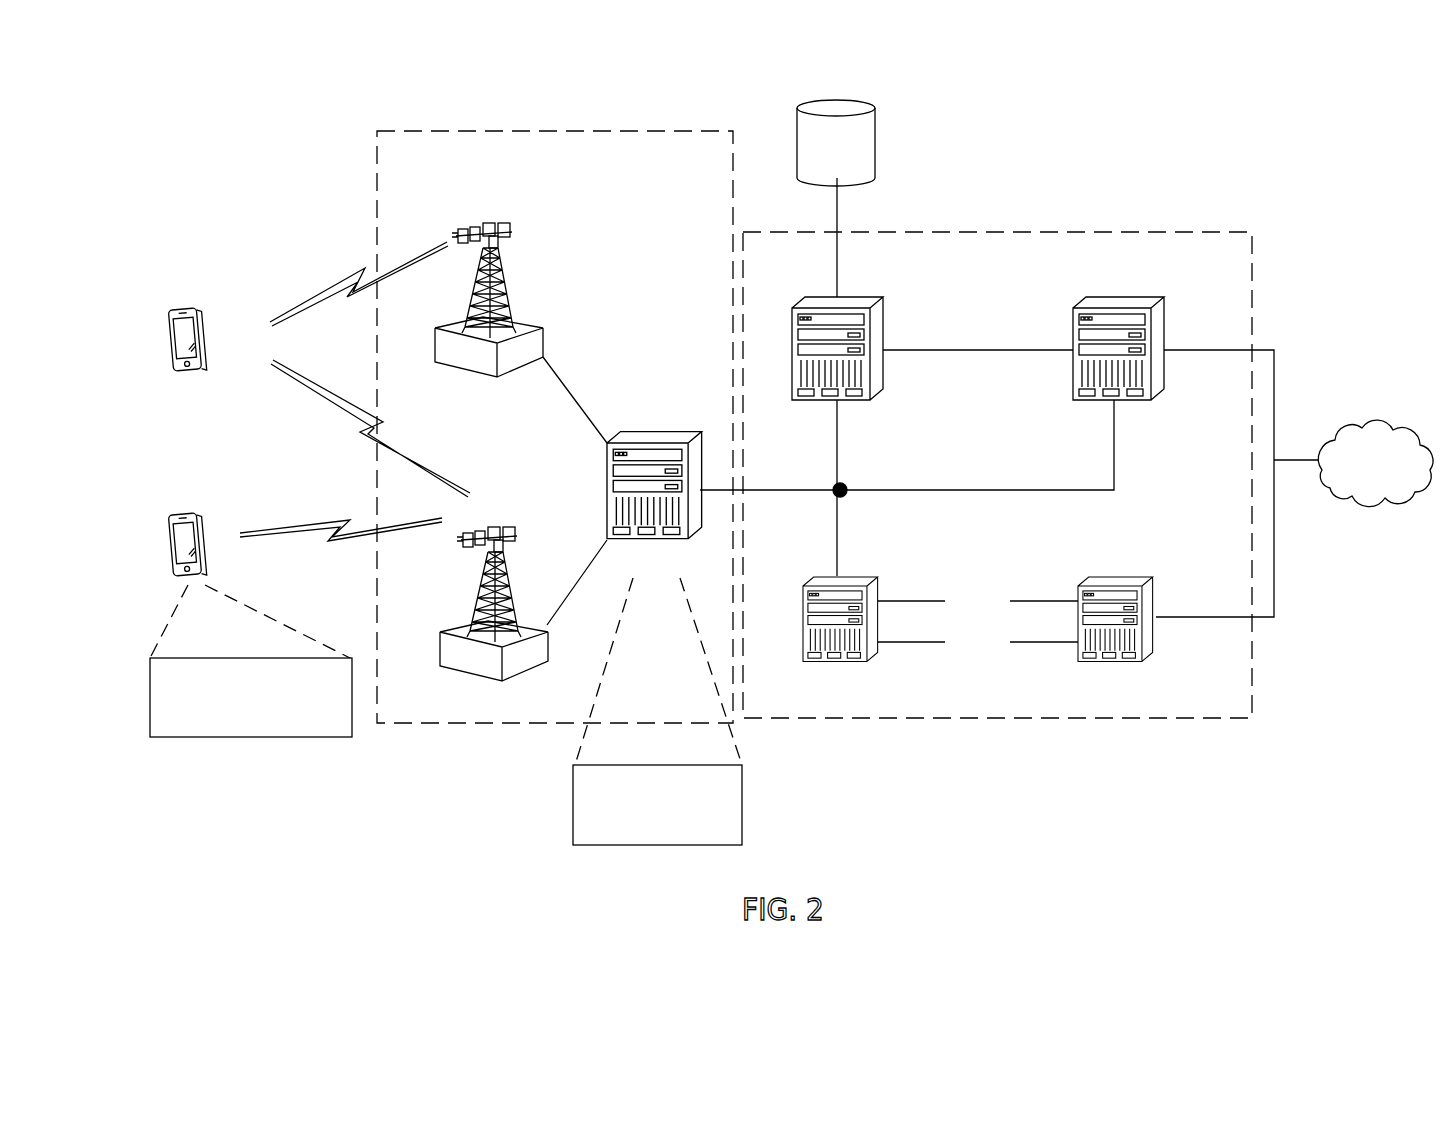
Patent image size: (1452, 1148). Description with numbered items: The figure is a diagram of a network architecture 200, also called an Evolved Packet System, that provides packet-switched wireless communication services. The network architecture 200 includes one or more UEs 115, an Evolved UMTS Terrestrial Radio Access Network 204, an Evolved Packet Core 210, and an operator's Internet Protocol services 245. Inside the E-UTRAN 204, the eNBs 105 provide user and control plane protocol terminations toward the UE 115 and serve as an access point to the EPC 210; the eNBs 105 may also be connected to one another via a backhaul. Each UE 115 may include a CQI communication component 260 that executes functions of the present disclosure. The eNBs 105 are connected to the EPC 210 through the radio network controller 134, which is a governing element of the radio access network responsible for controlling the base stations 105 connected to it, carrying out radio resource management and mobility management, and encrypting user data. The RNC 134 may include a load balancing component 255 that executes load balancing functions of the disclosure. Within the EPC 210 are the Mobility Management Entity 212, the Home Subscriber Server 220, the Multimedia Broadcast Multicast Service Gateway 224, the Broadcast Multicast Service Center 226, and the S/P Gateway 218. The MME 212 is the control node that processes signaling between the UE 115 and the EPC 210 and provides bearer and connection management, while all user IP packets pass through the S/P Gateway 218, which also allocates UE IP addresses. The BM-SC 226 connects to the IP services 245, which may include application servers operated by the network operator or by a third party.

The network architecture 200 is at (1378, 148).
The Evolved UMTS Terrestrial Radio Access Network 204 is at (555, 427).
The user equipment 115 is at (205, 365).
The evolved Node B 105 is at (508, 373).
The radio network controller 134 is at (686, 542).
The Evolved Packet Core 210 is at (997, 475).
The Home Subscriber Server 220 is at (836, 143).
The Mobility Management Entity 212 is at (884, 380).
The Serving/Packet Data Network Gateway 218 is at (1165, 353).
The Multimedia Broadcast Multicast Service Gateway 224 is at (879, 645).
The Broadcast Multicast Service Center 226 is at (1157, 636).
The Internet Protocol Services 245 is at (1375, 463).
The CQI communication component 260 is at (230, 740).
The load balancing component 255 is at (742, 812).